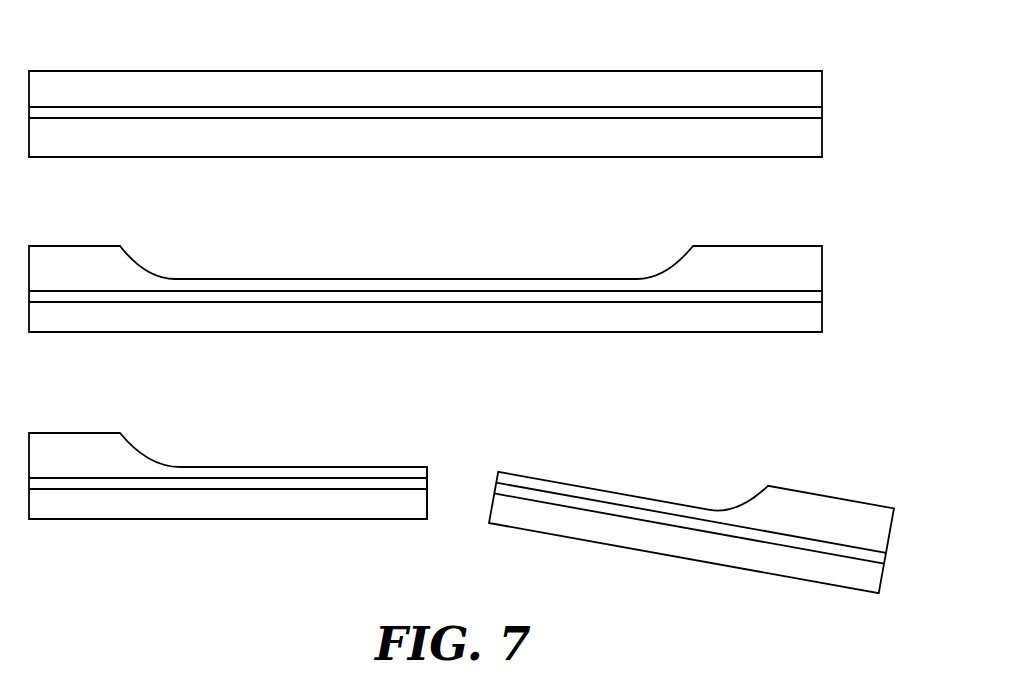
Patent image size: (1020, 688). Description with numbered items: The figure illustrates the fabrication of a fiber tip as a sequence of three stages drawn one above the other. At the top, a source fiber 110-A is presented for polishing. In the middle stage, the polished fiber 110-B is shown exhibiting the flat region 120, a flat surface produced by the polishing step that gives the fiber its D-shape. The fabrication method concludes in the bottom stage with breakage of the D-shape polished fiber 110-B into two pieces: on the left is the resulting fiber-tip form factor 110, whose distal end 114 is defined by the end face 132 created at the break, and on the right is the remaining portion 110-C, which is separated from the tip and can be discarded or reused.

The source fiber 110-A is at (228, 70).
The polished fiber 110-B is at (763, 245).
The flat region 120 is at (395, 270).
The fiber-tip form factor 110 is at (65, 432).
The distal end 114 is at (474, 466).
The end face 132 is at (439, 505).
The remaining portion 110-C is at (838, 496).